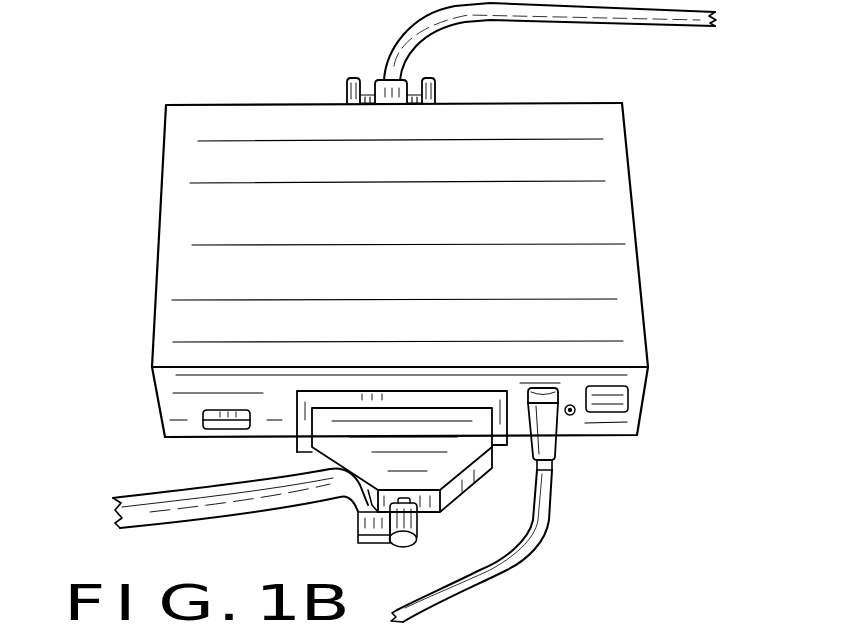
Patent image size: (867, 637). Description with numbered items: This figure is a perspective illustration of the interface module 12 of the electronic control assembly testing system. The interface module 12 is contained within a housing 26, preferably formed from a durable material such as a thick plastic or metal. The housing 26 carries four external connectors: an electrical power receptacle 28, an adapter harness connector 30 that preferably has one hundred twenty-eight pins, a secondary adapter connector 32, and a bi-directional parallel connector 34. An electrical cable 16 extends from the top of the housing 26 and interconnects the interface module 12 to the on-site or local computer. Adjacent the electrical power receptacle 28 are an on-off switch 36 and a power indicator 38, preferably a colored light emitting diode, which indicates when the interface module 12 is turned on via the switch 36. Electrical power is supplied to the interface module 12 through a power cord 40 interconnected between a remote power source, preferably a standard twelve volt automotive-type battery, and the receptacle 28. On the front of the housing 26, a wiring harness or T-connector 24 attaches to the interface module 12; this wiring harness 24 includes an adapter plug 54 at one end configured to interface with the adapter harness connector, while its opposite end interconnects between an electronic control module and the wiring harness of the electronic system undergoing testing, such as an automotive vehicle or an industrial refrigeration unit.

The interface module 12 is at (131, 215).
The electrical cable 16 is at (617, 26).
The wiring harness or T-connector 24 is at (202, 527).
The housing 26 is at (634, 207).
The electrical power receptacle 28 is at (558, 417).
The adapter harness connector 30 is at (300, 405).
The secondary adapter connector 32 is at (205, 431).
The bi-directional parallel connector 34 is at (354, 78).
The on-off switch 36 is at (626, 400).
The power indicator 38 is at (577, 414).
The power cord 40 is at (555, 458).
The adapter plug 54 is at (357, 507).